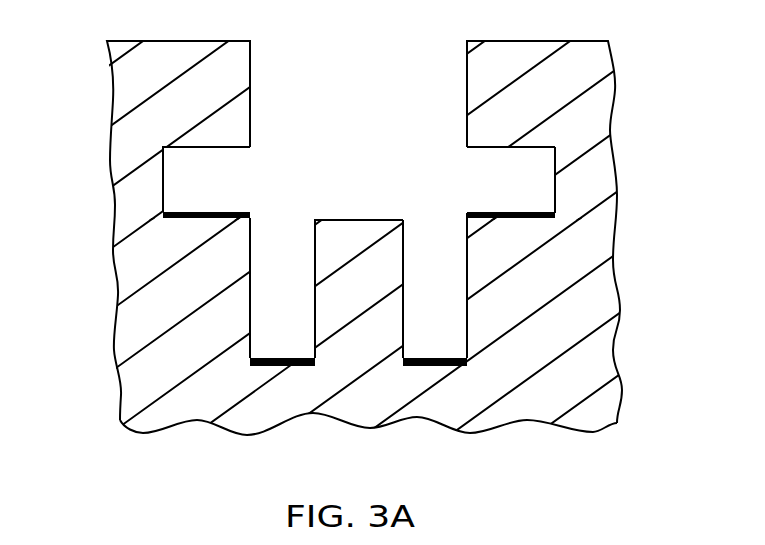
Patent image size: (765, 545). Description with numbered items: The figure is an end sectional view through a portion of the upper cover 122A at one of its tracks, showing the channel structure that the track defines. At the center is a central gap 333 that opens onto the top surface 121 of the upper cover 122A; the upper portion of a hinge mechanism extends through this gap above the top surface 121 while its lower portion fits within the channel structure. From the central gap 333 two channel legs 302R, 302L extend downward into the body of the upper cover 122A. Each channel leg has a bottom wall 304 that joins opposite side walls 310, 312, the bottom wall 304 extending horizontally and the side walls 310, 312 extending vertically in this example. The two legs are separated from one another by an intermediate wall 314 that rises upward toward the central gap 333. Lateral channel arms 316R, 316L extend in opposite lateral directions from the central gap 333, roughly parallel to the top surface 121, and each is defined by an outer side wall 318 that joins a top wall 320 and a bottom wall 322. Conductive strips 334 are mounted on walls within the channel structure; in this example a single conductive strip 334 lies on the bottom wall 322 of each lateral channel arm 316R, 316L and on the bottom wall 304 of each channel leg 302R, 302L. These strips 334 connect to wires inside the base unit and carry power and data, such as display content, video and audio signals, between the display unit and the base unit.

The top surface 121 is at (160, 41).
The upper cover 122A is at (559, 86).
The central gap 333 is at (381, 93).
The top wall 320 is at (495, 147).
The outer side wall 318 is at (555, 161).
The bottom wall 322 is at (498, 212).
The lateral channel arm 316R is at (535, 183).
The lateral channel arm 316L is at (200, 182).
The intermediate wall 314 is at (364, 228).
The side wall 310 is at (467, 266).
The side wall 312 is at (403, 332).
The bottom wall 304 is at (292, 358).
The channel leg 302L is at (262, 263).
The channel leg 302R is at (435, 268).
The conductive strip 334 is at (183, 218).